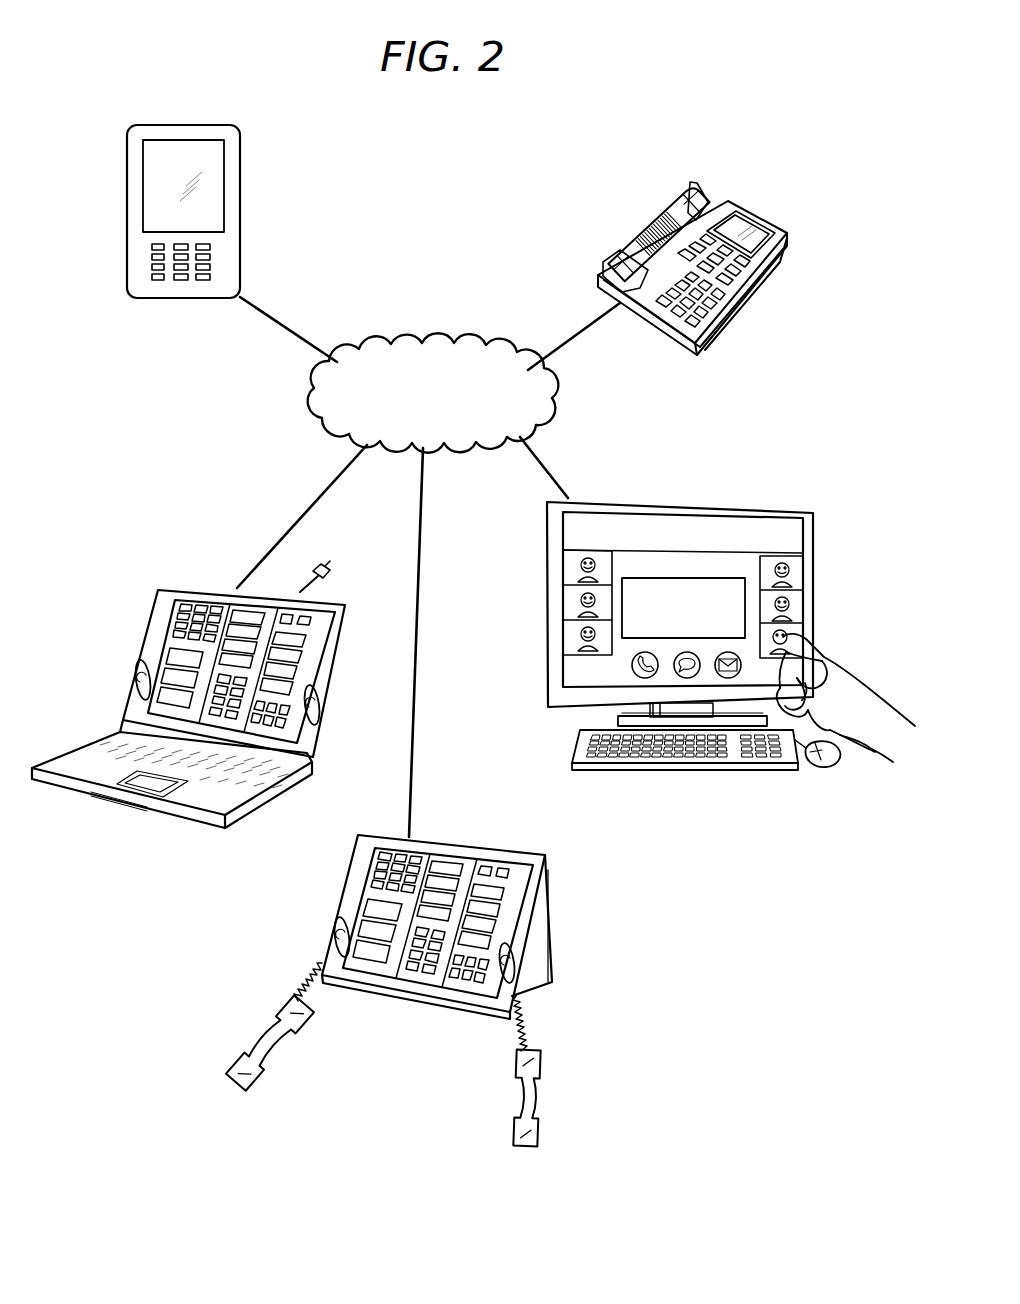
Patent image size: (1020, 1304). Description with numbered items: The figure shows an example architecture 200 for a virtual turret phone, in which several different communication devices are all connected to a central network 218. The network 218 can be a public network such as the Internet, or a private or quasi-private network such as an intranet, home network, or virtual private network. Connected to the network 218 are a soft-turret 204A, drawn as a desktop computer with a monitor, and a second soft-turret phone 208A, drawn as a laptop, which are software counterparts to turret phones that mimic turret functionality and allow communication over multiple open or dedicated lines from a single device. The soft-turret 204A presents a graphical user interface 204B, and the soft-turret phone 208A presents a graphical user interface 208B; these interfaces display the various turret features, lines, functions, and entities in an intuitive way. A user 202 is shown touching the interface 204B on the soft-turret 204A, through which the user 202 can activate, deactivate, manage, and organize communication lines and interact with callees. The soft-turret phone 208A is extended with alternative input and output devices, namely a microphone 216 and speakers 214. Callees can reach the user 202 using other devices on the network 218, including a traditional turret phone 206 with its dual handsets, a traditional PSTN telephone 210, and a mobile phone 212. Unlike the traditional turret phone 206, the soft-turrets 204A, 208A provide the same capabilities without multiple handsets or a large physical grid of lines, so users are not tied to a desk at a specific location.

The architecture 200 is at (425, 208).
The user 202 is at (848, 665).
The soft-turret 204A is at (782, 512).
The graphical user interface 204B is at (683, 528).
The traditional turret phone 206 is at (458, 835).
The soft-turret phone 208A is at (208, 583).
The graphical user interface 208B is at (173, 603).
The traditional telephone 210 is at (748, 208).
The mobile phone 212 is at (186, 125).
The speakers 214 is at (137, 664).
The microphone 216 is at (322, 566).
The network 218 is at (437, 340).